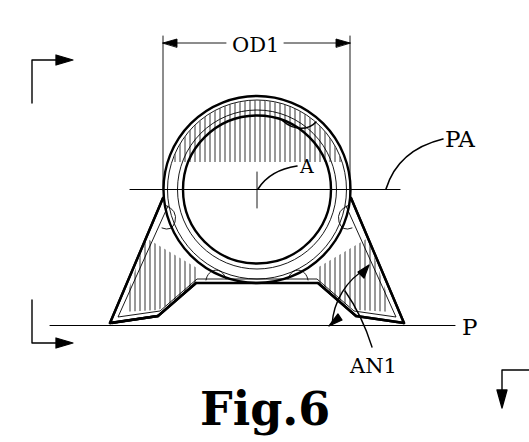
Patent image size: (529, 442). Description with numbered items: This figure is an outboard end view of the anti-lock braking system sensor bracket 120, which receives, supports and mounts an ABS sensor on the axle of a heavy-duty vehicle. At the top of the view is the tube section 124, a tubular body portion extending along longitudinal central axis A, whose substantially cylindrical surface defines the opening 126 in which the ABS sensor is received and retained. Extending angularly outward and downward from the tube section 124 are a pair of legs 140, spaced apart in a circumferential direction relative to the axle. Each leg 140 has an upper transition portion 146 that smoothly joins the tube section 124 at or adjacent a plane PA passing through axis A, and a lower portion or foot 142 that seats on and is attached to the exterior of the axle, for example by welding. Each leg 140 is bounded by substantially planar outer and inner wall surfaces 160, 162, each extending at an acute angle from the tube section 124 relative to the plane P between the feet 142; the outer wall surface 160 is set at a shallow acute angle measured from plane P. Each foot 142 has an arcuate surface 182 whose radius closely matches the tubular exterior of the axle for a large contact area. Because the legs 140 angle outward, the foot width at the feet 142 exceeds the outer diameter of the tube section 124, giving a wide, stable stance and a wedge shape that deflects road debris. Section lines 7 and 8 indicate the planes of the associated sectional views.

The ABS sensor bracket 120 is at (400, 109).
The tube section 124 is at (197, 118).
The opening 126 is at (316, 122).
The legs 140 is at (143, 266).
The foot 142 is at (117, 320).
The upper transition portion 146 is at (162, 226).
The outer wall surface 160 is at (117, 300).
The inner wall surface 162 is at (192, 290).
The arcuate surface 182 is at (148, 320).
The section line 7 is at (62, 203).
The section line 8 is at (512, 406).